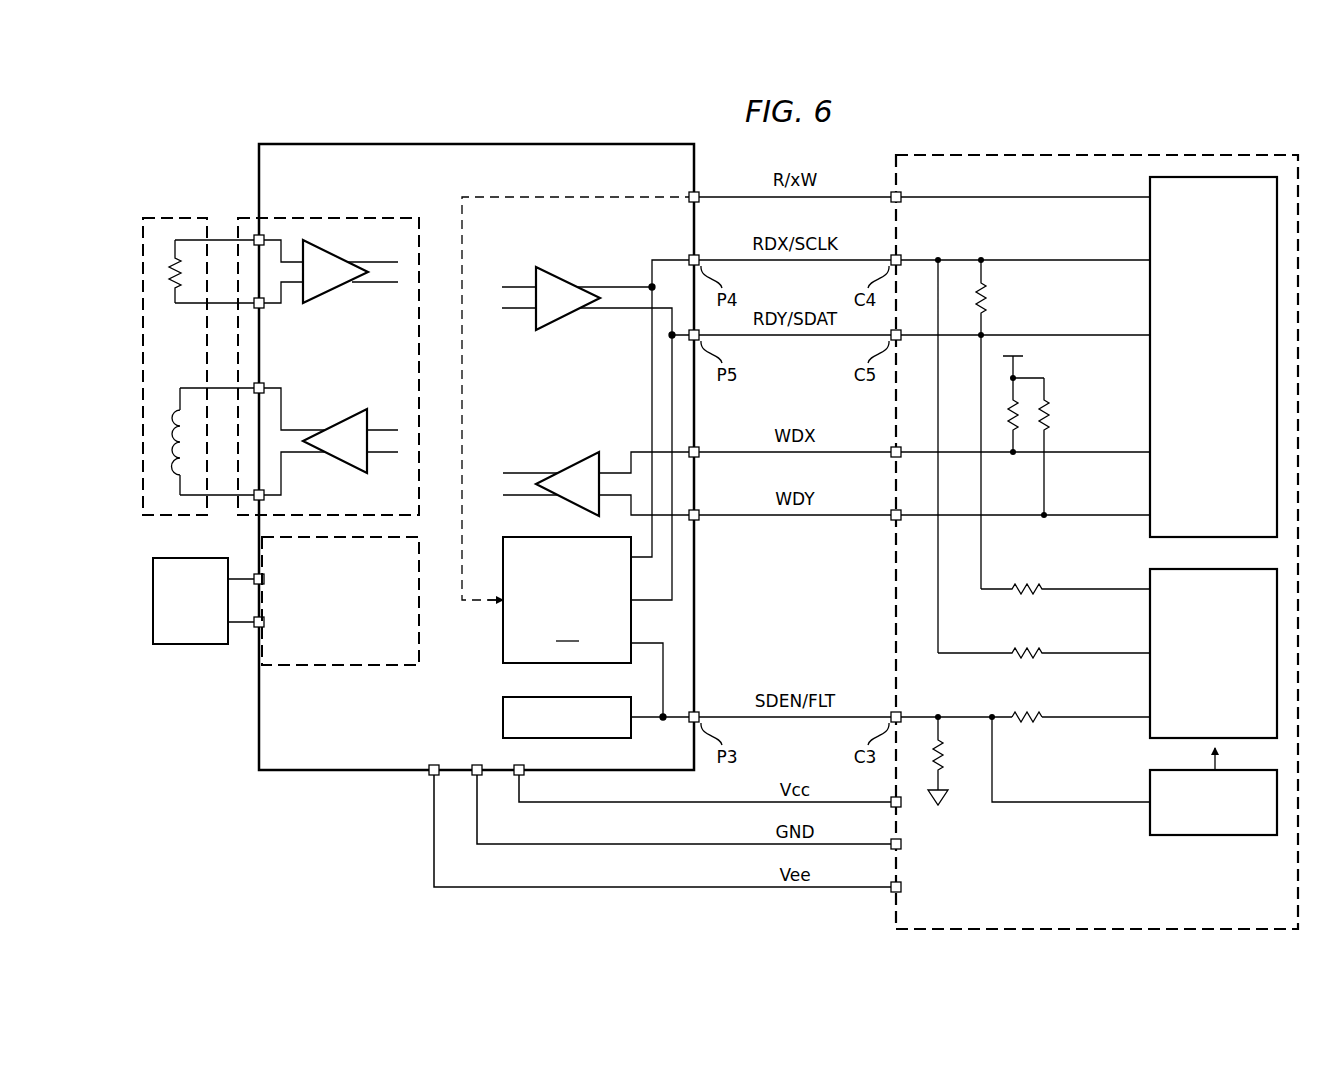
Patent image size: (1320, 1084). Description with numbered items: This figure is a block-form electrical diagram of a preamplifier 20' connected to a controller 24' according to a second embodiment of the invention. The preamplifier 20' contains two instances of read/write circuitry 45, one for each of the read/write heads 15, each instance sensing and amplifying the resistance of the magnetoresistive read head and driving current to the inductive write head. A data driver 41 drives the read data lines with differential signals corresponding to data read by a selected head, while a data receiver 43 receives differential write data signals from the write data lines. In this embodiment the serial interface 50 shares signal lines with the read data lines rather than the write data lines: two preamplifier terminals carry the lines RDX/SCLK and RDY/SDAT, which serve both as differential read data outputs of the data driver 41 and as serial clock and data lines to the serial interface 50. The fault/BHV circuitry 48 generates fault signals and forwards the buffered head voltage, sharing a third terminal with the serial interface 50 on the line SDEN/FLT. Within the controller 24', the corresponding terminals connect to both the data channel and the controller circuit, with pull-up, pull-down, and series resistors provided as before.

The preamplifier 20' is at (468, 430).
The controller 24' is at (1094, 512).
The read/write heads 15 is at (126, 612).
The read/write circuitry 45 is at (330, 690).
The data driver 41 is at (566, 271).
The data receiver 43 is at (572, 461).
The fault/BHV circuitry 48 is at (503, 721).
The serial interface 50 is at (567, 600).